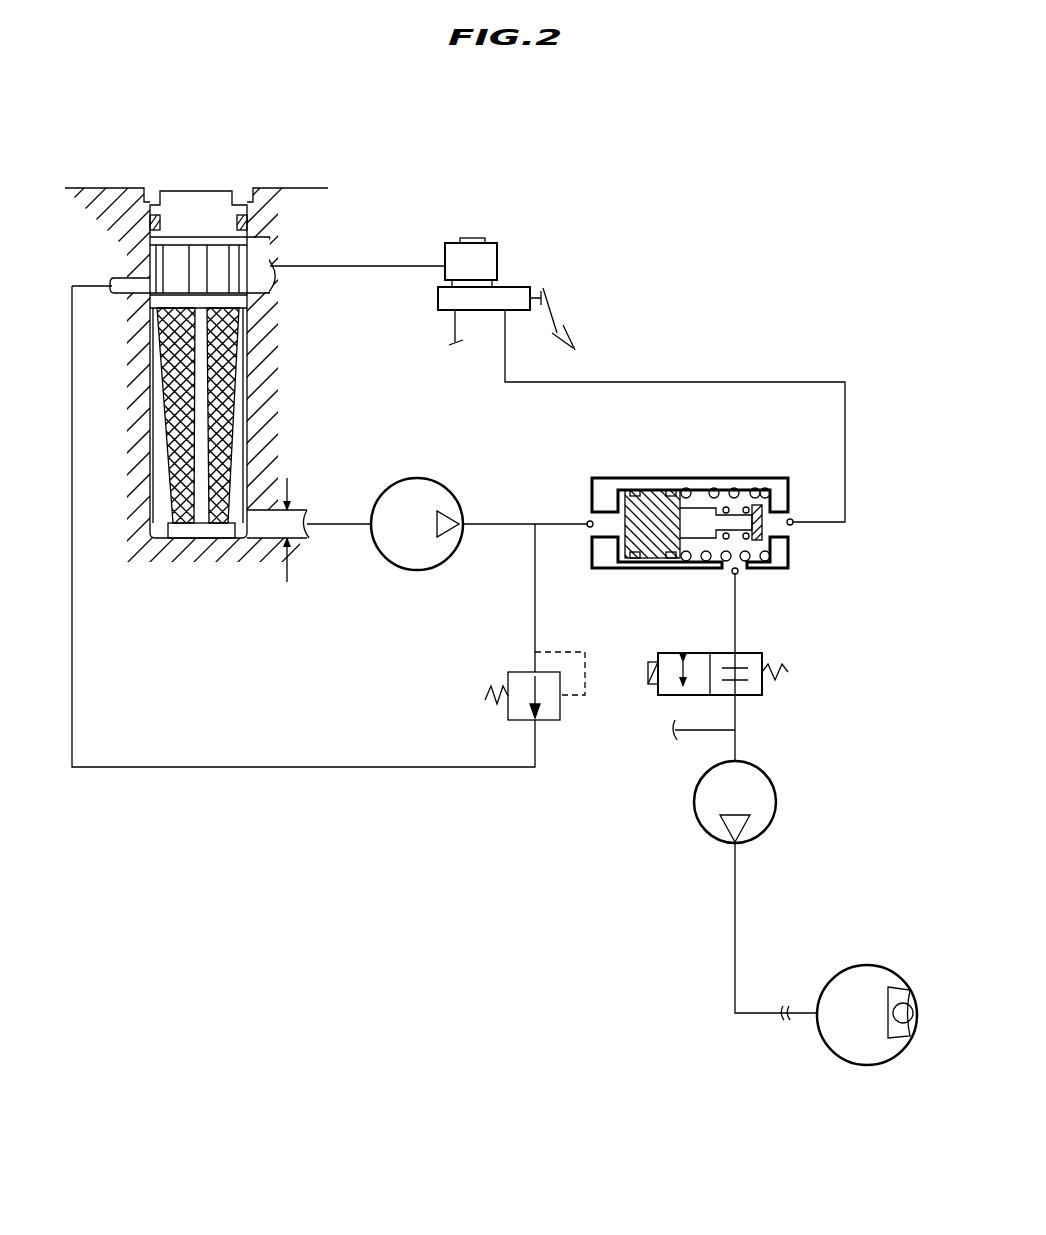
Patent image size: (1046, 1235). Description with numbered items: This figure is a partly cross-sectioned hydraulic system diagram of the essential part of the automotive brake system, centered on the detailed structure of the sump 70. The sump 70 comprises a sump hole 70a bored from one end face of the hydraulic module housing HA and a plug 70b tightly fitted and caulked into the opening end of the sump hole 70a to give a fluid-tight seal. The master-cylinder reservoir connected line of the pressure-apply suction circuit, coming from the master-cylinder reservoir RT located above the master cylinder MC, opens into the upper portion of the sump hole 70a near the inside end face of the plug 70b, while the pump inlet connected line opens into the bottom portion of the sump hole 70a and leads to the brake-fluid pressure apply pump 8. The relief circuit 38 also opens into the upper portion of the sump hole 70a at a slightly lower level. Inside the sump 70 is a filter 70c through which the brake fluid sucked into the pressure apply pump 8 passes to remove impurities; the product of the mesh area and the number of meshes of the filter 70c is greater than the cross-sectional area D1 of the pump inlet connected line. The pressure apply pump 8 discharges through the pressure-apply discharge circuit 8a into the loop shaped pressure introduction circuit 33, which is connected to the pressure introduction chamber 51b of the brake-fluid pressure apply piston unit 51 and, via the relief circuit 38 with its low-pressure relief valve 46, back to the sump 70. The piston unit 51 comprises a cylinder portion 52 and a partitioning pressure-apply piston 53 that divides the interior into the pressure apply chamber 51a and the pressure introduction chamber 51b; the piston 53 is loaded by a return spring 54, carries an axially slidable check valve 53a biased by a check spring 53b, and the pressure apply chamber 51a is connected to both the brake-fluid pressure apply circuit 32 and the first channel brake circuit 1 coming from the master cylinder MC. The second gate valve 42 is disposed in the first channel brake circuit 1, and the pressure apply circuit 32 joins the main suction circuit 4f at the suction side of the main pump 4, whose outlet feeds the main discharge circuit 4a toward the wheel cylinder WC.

The first channel brake circuit 1 is at (752, 380).
The main pump 4 is at (777, 805).
The main discharge circuit 4a is at (735, 978).
The main suction circuit 4f is at (736, 745).
The brake-fluid pressure apply pump 8 is at (397, 478).
The pressure-apply discharge circuit 8a is at (500, 527).
The brake-fluid pressure apply circuit 32 is at (738, 637).
The pressure introduction circuit 33 is at (555, 524).
The relief circuit 38 is at (480, 767).
The second gate valve 42 is at (762, 692).
The relief valve 46 is at (553, 723).
The brake-fluid pressure apply piston unit 51 is at (699, 511).
The pressure apply chamber 51a is at (705, 490).
The pressure introduction chamber 51b is at (598, 512).
The cylinder portion 52 is at (607, 562).
The pressure-apply piston 53 is at (637, 488).
The check valve 53a is at (770, 524).
The check spring 53b is at (745, 545).
The return spring 54 is at (700, 562).
The sump 70 is at (222, 327).
The sump hole 70a is at (243, 372).
The plug 70b is at (195, 205).
The filter 70c is at (178, 477).
The cross-sectional area D1 is at (287, 582).
The hydraulic module housing HA is at (252, 190).
The master cylinder MC is at (536, 287).
The master-cylinder reservoir RT is at (487, 236).
The wheel cylinder WC is at (865, 965).